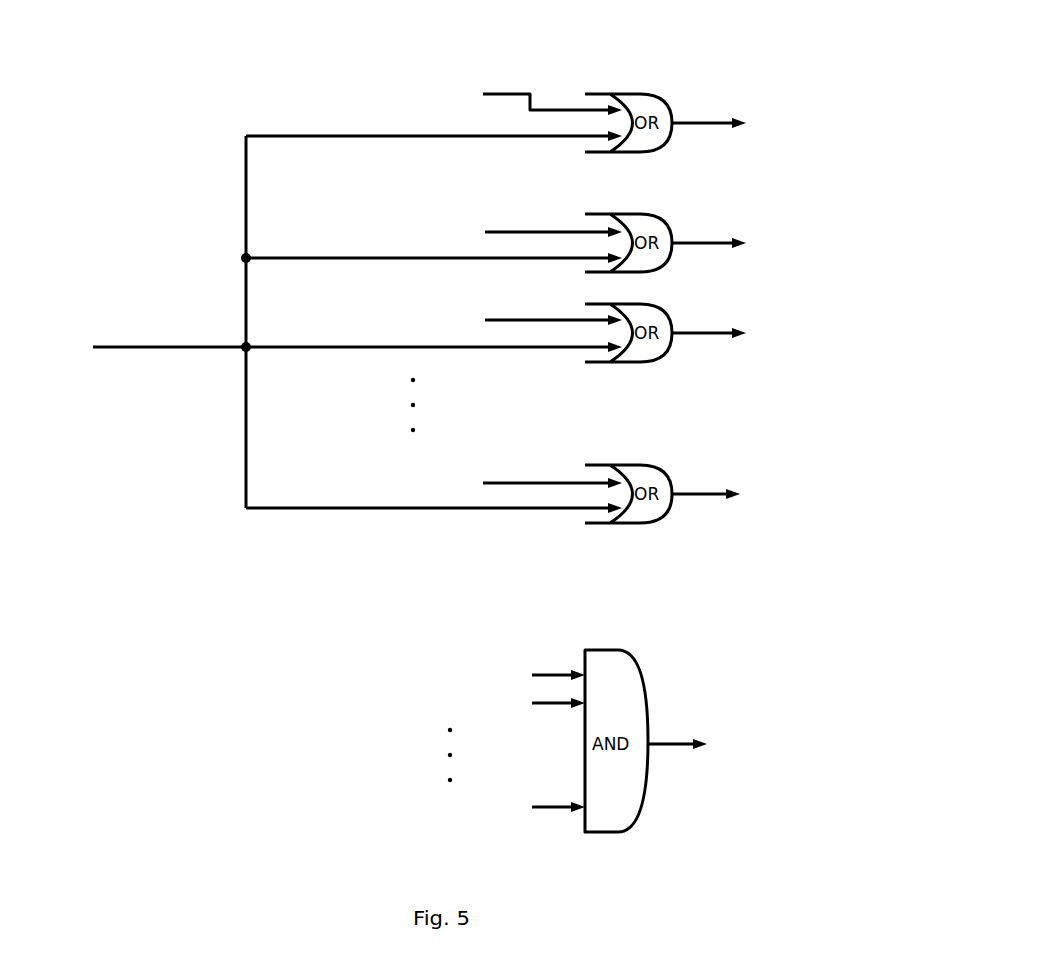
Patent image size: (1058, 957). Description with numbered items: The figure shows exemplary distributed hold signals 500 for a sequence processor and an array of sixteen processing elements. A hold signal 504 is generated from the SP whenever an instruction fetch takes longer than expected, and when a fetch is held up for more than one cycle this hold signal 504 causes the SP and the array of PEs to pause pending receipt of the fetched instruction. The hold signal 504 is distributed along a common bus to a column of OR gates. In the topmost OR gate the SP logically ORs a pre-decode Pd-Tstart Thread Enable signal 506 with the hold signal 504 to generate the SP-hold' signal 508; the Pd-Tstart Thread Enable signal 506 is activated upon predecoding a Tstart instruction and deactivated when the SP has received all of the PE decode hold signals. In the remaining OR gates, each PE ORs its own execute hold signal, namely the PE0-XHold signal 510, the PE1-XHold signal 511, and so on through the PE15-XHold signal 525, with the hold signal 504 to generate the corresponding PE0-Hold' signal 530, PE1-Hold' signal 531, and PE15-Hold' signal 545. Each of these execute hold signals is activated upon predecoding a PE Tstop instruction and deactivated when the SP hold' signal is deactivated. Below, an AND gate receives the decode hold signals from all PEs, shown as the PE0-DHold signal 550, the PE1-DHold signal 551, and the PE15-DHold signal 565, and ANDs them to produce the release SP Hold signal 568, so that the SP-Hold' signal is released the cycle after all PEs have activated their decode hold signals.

The distributed hold signals 500 is at (705, 28).
The hold signal 504 is at (117, 347).
The Pd-Tstart Thread Enable signal 506 is at (522, 93).
The SP-hold' signal 508 is at (703, 122).
The PE0-XHold signal 510 is at (523, 232).
The PE1-XHold signal 511 is at (522, 320).
The PE15-XHold signal 525 is at (513, 483).
The PE0-Hold' signal 530 is at (702, 243).
The PE1-Hold' signal 531 is at (699, 333).
The PE15-Hold' signal 545 is at (694, 493).
The PE0-DHold signal 550 is at (533, 673).
The PE1-DHold signal 551 is at (553, 705).
The PE15-DHold signal 565 is at (550, 808).
The release SP Hold signal 568 is at (690, 744).